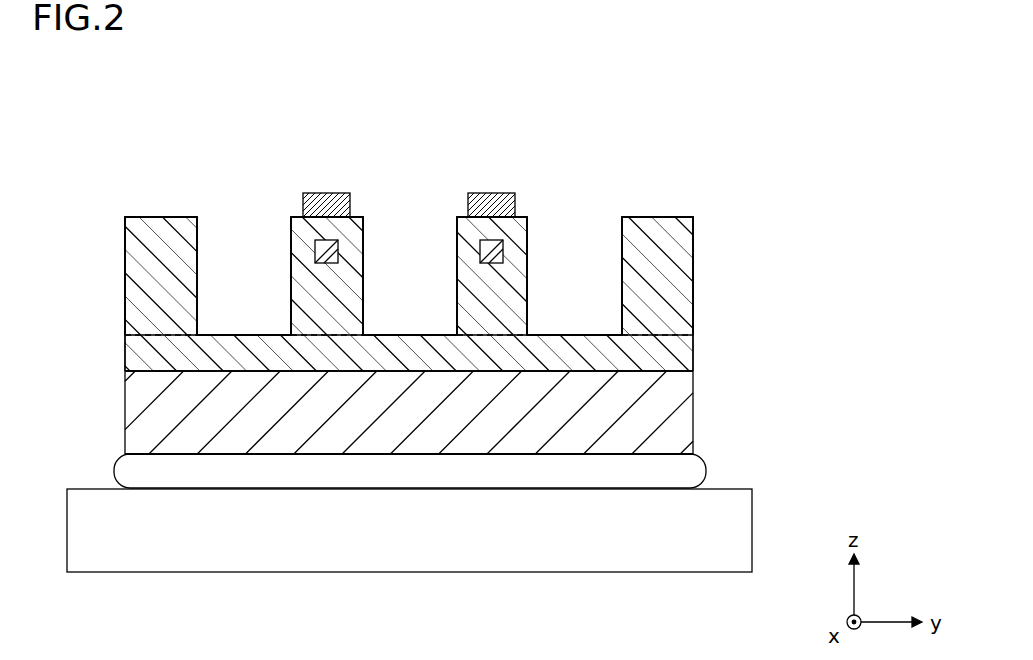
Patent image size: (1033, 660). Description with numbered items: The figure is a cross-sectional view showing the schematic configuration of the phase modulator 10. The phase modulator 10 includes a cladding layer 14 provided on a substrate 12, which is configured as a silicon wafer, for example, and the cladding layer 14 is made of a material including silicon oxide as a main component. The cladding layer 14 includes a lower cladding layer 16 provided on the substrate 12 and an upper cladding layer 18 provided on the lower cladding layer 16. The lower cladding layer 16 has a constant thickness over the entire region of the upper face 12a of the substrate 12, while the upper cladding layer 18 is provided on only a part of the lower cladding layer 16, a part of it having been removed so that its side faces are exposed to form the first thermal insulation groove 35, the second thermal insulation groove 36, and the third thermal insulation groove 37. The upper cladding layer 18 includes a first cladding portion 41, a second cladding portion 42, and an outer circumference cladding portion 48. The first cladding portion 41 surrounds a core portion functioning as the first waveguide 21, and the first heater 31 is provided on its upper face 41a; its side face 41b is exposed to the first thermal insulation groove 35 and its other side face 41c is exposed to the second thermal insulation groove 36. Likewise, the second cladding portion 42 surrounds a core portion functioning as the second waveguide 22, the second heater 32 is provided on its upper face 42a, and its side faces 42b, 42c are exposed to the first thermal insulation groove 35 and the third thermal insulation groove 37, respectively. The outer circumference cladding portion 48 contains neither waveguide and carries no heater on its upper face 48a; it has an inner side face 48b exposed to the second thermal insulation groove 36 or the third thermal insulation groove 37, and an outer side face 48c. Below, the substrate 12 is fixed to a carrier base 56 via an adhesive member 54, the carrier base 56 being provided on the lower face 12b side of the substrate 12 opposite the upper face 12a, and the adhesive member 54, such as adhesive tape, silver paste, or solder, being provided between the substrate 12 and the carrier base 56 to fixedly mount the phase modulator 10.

The phase modulator 10 is at (649, 121).
The substrate 12 is at (688, 413).
The upper face of substrate 12a is at (126, 366).
The lower face of substrate 12b is at (125, 454).
The cladding layer 14 is at (768, 283).
The lower cladding layer 16 is at (690, 353).
The upper cladding layer 18 is at (693, 300).
The first waveguide 21 is at (480, 250).
The second waveguide 22 is at (338, 250).
The first heater 31 is at (492, 193).
The second heater 32 is at (328, 193).
The first thermal insulation groove 35 is at (411, 229).
The second thermal insulation groove 36 is at (590, 229).
The third thermal insulation groove 37 is at (238, 228).
The first cladding portion 41 is at (517, 250).
The upper face of first cladding portion 41a is at (527, 217).
The side face of first cladding portion 41b is at (457, 313).
The side face of first cladding portion 41c is at (527, 284).
The second cladding portion 42 is at (300, 250).
The upper face of second cladding portion 42a is at (292, 217).
The side face of second cladding portion 42b is at (363, 284).
The side face of second cladding portion 42c is at (291, 284).
The outer circumference cladding portion 48 is at (133, 232).
The upper face of outer circumference cladding portion 48a is at (128, 217).
The inner side face of outer circumference cladding portion 48b is at (197, 313).
The outer side face of outer circumference cladding portion 48c is at (125, 266).
The adhesive member 54 is at (700, 472).
The carrier base 56 is at (752, 532).